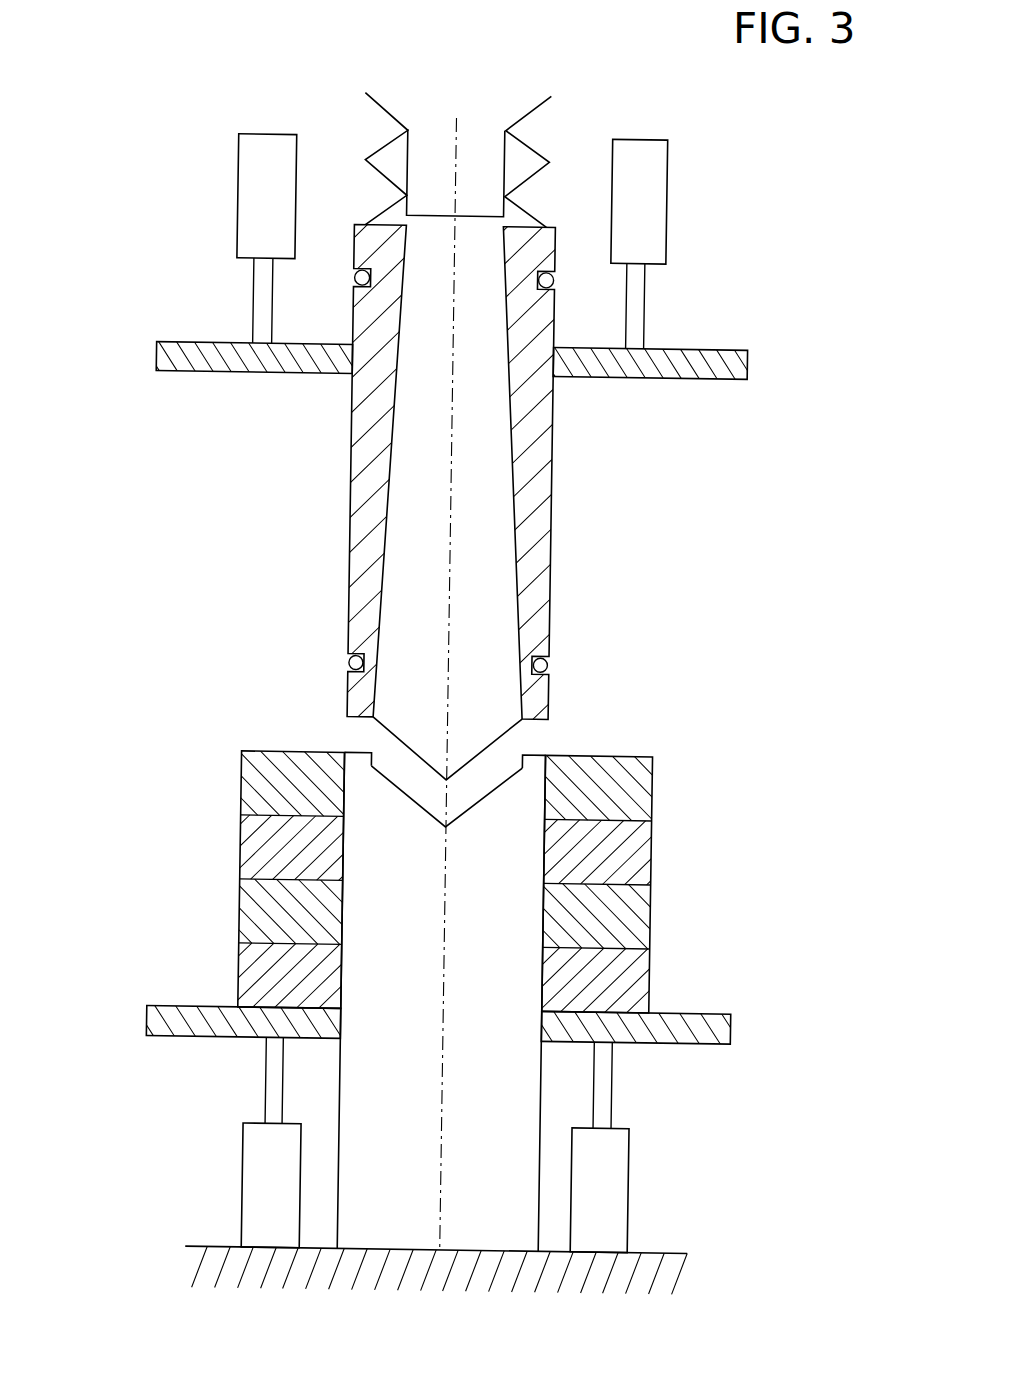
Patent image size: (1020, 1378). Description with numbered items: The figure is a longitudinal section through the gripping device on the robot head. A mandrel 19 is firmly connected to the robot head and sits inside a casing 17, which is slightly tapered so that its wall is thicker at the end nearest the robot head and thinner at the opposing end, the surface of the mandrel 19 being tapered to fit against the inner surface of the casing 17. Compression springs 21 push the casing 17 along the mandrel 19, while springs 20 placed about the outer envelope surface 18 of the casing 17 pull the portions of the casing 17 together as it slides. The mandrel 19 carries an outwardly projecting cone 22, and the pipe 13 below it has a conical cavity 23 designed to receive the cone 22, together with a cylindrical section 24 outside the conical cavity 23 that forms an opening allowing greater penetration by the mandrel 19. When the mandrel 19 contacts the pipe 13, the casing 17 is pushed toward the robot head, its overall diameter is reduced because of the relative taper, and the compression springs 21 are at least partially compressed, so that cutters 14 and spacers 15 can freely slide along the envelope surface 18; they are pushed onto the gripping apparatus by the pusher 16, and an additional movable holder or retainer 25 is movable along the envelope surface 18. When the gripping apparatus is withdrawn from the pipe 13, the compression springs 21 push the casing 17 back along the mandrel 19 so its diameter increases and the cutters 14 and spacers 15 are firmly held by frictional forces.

The pipe 13 is at (518, 864).
The cutters 14 is at (267, 903).
The spacers 15 is at (259, 893).
The pusher 16 is at (198, 1024).
The casing 17 is at (370, 604).
The outer envelope surface 18 is at (356, 457).
The mandrel 19 is at (424, 558).
The springs 20 is at (357, 666).
The compression springs 21 is at (375, 154).
The cone 22 is at (497, 744).
The conical cavity 23 is at (512, 782).
The cylindrical section 24 is at (532, 757).
The holder 25 is at (173, 362).